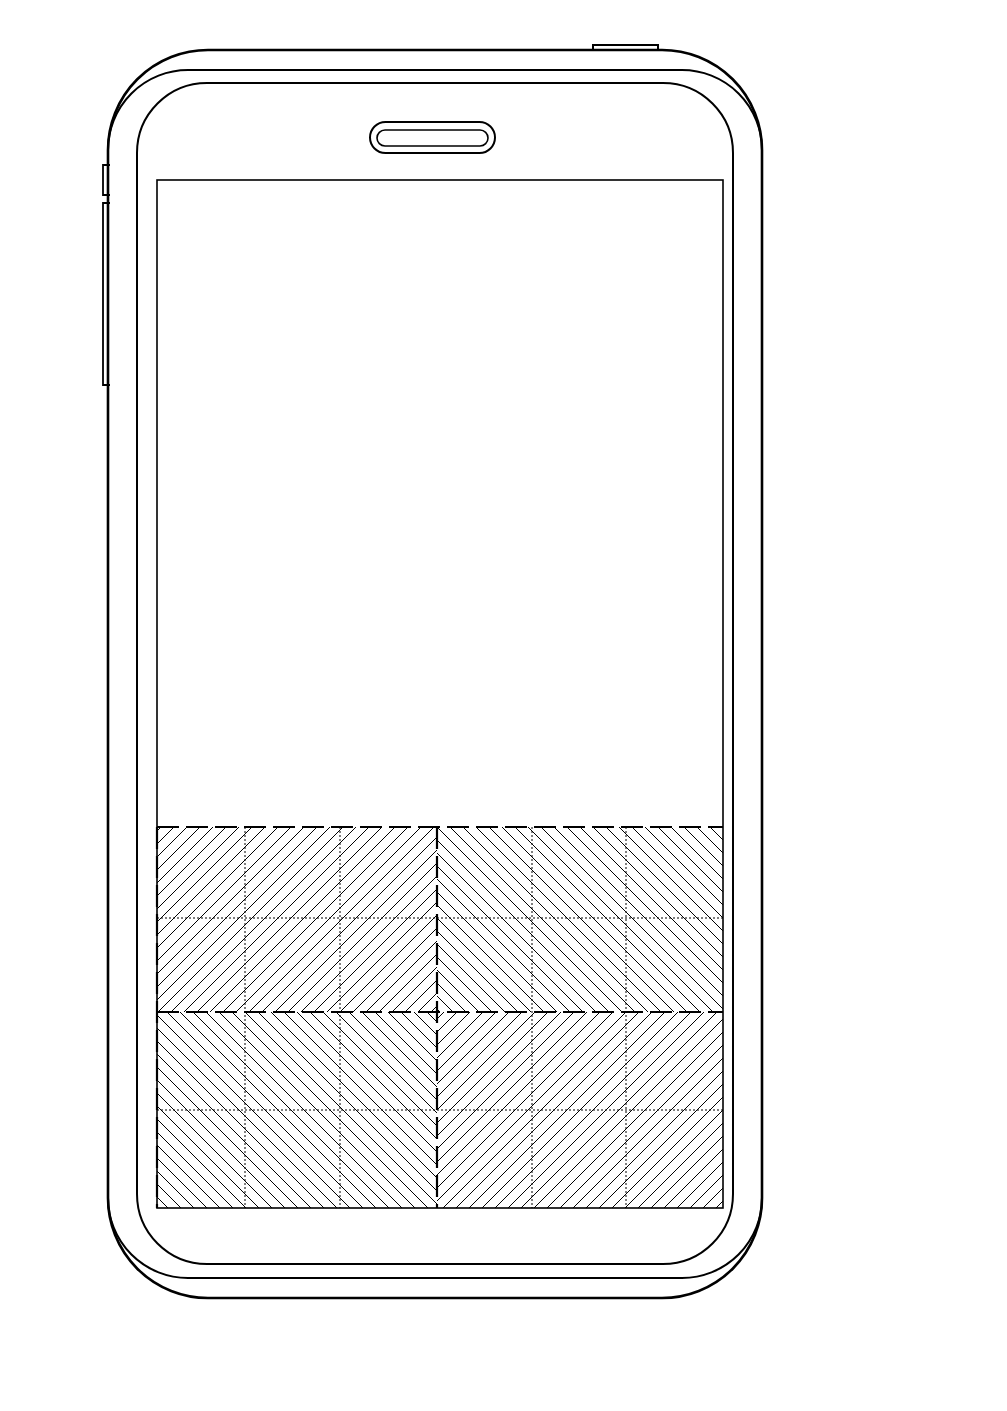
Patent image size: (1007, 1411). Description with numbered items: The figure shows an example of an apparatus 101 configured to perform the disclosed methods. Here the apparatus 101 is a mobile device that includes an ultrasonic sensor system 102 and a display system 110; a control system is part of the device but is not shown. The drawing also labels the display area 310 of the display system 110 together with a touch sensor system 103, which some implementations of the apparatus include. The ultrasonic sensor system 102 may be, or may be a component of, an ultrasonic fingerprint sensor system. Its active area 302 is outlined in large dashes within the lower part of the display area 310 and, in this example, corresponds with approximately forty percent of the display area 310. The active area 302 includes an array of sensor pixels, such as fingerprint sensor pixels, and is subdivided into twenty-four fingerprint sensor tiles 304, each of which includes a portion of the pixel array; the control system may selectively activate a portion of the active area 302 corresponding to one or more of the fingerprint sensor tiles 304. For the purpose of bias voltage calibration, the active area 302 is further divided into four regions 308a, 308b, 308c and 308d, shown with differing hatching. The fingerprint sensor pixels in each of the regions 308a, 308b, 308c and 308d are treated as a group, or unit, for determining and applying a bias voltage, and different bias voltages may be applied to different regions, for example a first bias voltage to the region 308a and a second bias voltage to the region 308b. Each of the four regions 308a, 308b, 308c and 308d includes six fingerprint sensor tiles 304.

The apparatus 101 is at (660, 46).
The display system 110 is at (508, 647).
The display area 310 is at (508, 666).
The touch sensor system 103 is at (688, 180).
The ultrasonic sensor system 102 is at (453, 951).
The active area 302 is at (453, 964).
The fingerprint sensor tiles 304 is at (675, 852).
The region 308a is at (186, 878).
The region 308b is at (184, 1063).
The region 308c is at (712, 947).
The region 308d is at (682, 1094).